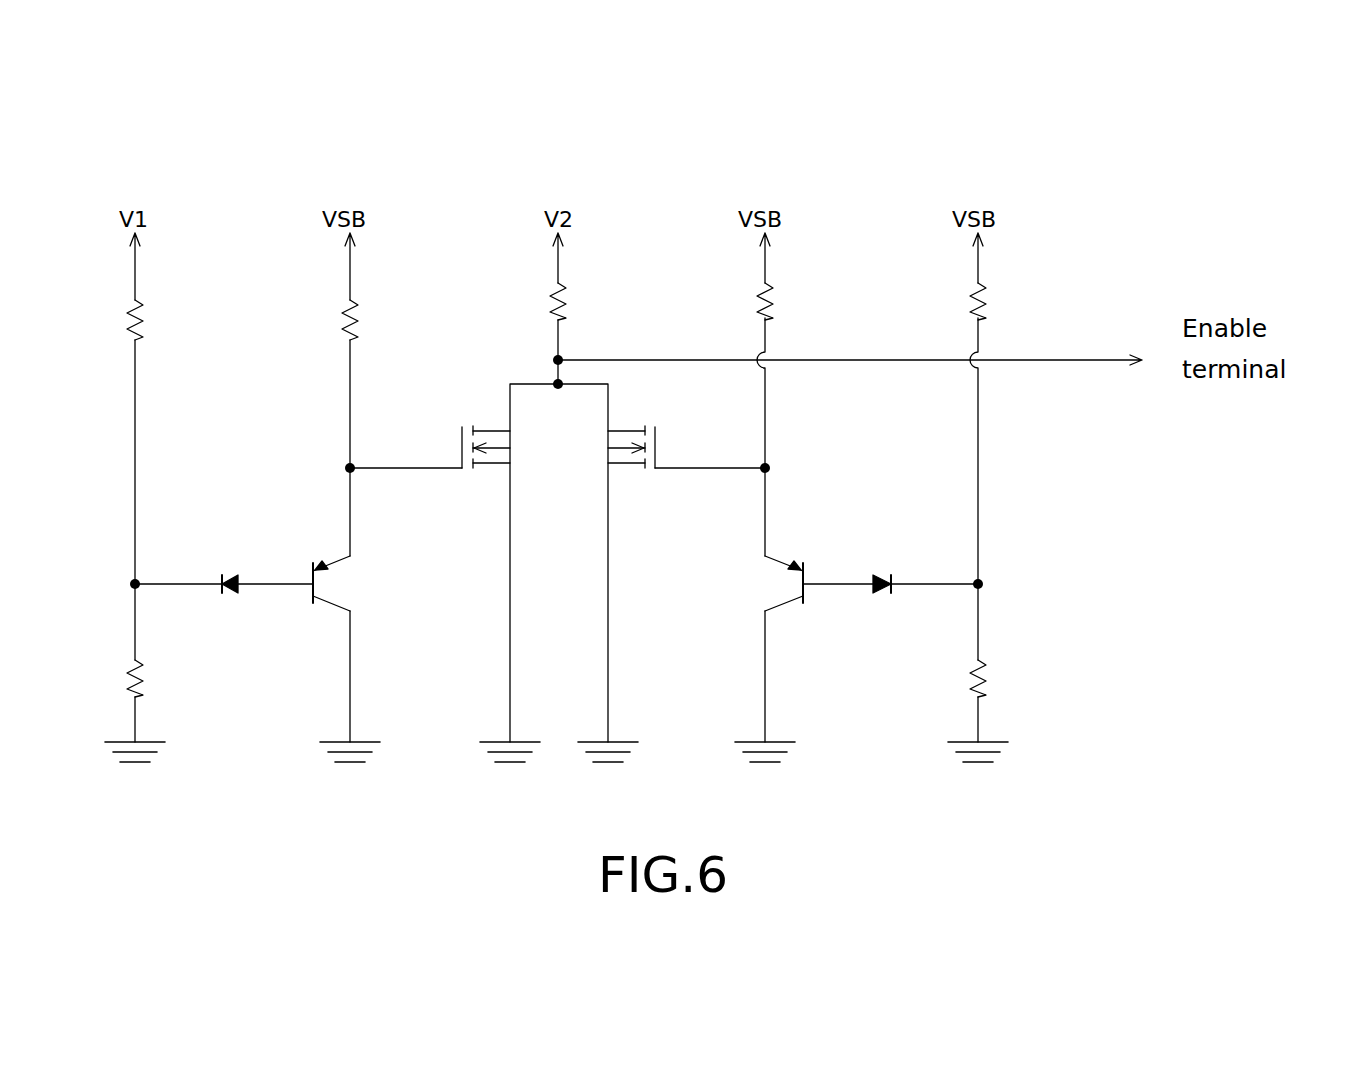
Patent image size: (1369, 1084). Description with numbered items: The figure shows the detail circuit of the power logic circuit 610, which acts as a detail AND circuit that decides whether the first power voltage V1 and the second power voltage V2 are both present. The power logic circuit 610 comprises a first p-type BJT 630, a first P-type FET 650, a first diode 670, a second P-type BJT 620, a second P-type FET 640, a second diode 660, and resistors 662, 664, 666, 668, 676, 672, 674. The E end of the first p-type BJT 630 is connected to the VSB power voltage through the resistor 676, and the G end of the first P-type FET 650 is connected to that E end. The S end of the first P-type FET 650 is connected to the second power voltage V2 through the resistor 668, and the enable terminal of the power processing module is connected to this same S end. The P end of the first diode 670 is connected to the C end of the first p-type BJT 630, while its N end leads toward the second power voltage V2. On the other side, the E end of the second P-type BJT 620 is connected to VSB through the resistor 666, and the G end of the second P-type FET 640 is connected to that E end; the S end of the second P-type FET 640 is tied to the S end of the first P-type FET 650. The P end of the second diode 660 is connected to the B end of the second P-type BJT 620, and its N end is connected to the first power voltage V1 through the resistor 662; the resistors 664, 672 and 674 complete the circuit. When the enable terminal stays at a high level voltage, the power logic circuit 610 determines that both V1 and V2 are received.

The power logic circuit 610 is at (1208, 183).
The second P-type BJT 620 is at (333, 578).
The first p-type BJT 630 is at (782, 578).
The second P-type FET 640 is at (490, 428).
The first P-type FET 650 is at (627, 428).
The second diode 660 is at (228, 575).
The resistor 662 is at (140, 325).
The resistor 664 is at (140, 685).
The resistor 666 is at (355, 325).
The resistor 668 is at (563, 310).
The first diode 670 is at (884, 575).
The resistor 672 is at (983, 310).
The resistor 674 is at (983, 685).
The resistor 676 is at (770, 310).